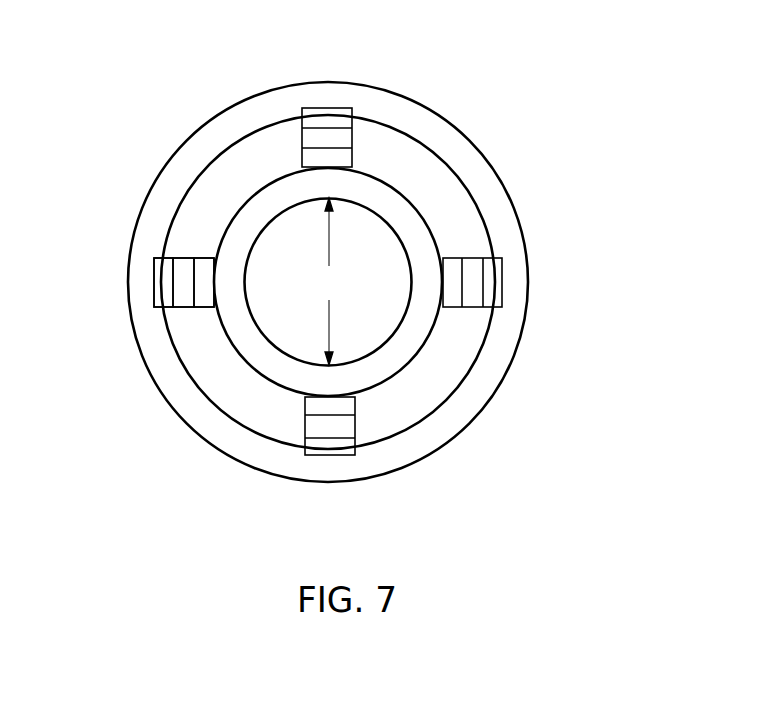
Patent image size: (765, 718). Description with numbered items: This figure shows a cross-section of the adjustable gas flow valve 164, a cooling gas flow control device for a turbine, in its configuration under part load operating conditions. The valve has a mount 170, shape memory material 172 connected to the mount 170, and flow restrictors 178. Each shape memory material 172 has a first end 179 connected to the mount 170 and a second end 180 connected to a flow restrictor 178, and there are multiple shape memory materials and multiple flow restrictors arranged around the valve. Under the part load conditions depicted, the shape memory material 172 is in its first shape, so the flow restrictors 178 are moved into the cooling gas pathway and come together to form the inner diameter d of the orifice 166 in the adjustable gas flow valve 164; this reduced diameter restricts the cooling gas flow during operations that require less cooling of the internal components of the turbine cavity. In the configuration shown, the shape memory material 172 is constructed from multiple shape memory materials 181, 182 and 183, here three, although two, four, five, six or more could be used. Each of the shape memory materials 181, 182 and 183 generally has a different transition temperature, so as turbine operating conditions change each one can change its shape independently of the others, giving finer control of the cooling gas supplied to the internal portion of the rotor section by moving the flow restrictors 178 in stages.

The adjustable gas flow valve 164 is at (470, 88).
The orifice 166 is at (390, 263).
The mount 170 is at (502, 218).
The shape memory material 172 is at (192, 259).
The flow restrictor 178 is at (417, 332).
The first end 179 is at (503, 277).
The second end 180 is at (325, 168).
The shape memory material 181 is at (163, 295).
The shape memory material 182 is at (187, 302).
The shape memory material 183 is at (207, 302).